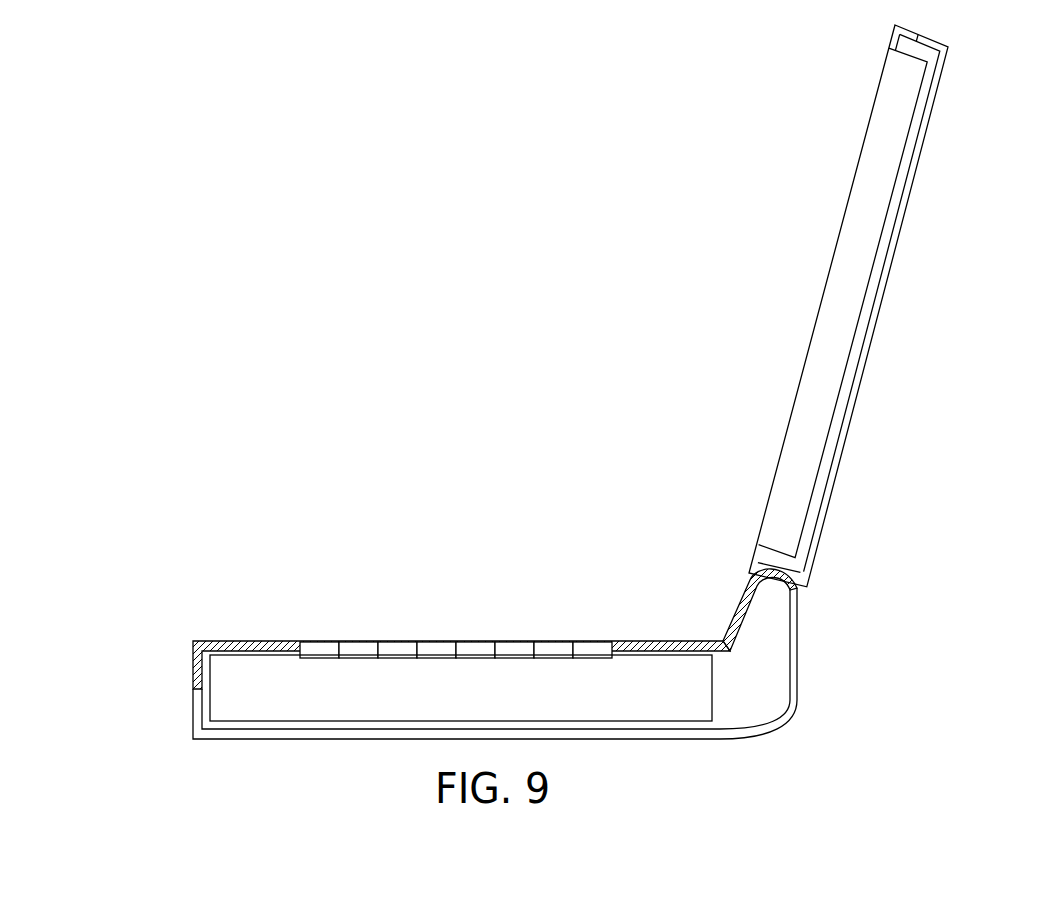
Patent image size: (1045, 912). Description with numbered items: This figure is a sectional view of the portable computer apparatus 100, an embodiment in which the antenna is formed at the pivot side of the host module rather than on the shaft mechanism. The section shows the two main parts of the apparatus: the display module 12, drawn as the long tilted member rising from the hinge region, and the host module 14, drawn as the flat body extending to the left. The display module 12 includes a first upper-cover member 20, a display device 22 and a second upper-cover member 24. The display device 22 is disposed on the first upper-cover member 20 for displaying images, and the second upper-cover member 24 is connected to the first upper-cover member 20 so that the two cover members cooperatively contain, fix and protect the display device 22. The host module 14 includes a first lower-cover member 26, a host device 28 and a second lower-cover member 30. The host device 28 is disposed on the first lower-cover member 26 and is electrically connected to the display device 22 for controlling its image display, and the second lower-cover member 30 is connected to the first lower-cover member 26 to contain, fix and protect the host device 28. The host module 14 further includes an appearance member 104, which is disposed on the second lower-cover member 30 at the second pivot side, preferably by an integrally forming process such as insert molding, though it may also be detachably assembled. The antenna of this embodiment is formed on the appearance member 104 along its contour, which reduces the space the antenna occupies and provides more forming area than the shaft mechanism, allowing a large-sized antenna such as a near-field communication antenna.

The portable computer apparatus 100 is at (289, 118).
The display module 12 is at (946, 282).
The first upper-cover member 20 is at (878, 313).
The display device 22 is at (838, 348).
The second upper-cover member 24 is at (760, 562).
The appearance member 104 is at (700, 640).
The host module 14 is at (124, 608).
The second lower-cover member 30 is at (223, 642).
The host device 28 is at (247, 682).
The first lower-cover member 26 is at (222, 733).